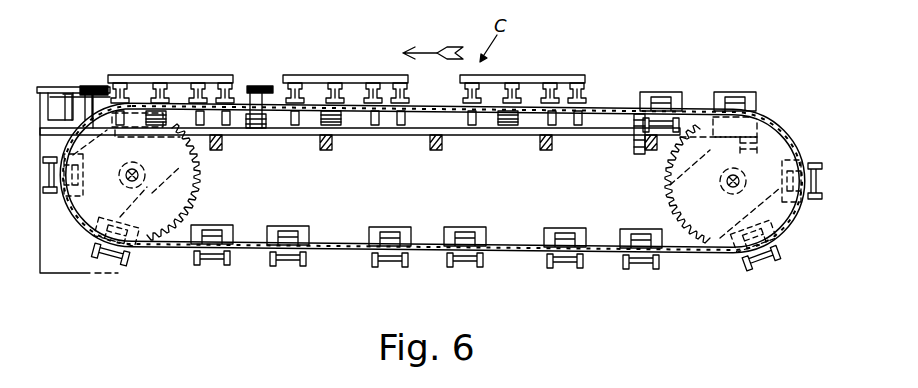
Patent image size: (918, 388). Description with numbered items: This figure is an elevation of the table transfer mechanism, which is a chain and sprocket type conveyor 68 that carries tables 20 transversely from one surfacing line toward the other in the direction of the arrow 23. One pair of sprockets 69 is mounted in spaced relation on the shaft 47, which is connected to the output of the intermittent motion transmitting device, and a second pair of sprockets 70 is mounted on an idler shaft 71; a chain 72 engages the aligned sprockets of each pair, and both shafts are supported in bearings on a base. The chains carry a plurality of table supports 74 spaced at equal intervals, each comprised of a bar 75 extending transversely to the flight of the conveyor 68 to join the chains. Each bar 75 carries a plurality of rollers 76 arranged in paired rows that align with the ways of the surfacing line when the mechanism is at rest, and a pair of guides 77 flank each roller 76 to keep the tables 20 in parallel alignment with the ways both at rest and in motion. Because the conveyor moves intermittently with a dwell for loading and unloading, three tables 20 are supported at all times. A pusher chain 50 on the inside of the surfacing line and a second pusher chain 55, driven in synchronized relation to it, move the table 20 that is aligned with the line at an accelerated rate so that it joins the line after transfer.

The table 20 is at (197, 80).
The arrow 23 is at (423, 48).
The shaft 47 is at (136, 172).
The pusher chain 50 is at (258, 92).
The second pusher chain 55 is at (93, 88).
The chain and sprocket type conveyor 68 is at (605, 108).
The sprockets 69 is at (180, 185).
The second pair of sprockets 70 is at (688, 182).
The idler shaft 71 is at (737, 179).
The chain 72 is at (342, 251).
The table supports 74 is at (763, 103).
The bar 75 is at (230, 227).
The rollers 76 is at (563, 243).
The guides 77 is at (675, 95).